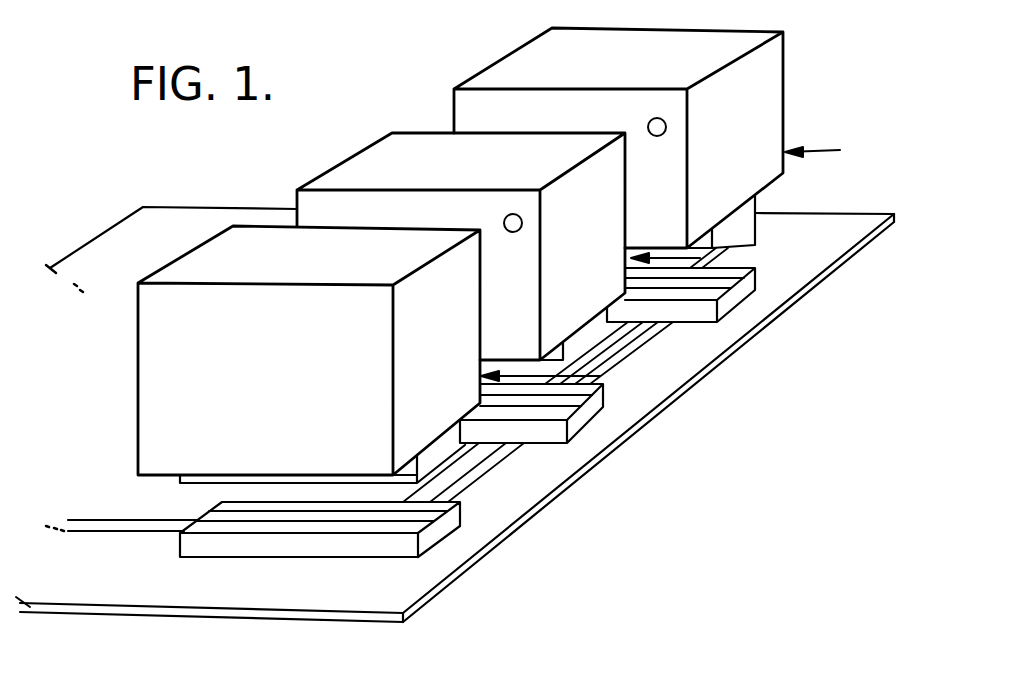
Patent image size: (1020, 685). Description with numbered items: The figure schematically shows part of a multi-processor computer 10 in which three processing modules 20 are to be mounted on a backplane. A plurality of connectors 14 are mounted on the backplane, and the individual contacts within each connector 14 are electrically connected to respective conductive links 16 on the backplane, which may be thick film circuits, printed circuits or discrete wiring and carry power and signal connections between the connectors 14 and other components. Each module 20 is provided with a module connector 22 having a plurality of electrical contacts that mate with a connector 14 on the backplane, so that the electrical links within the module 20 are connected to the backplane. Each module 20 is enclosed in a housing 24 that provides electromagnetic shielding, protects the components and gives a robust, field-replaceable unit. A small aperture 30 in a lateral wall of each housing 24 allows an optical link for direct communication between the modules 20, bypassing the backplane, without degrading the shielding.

The multi-processor computer 10 is at (714, 595).
The connectors 14 is at (437, 537).
The conductive links 16 is at (622, 410).
The processing modules 20 is at (600, 376).
The module connector 22 is at (428, 455).
The housing 24 is at (140, 332).
The aperture 30 is at (667, 126).